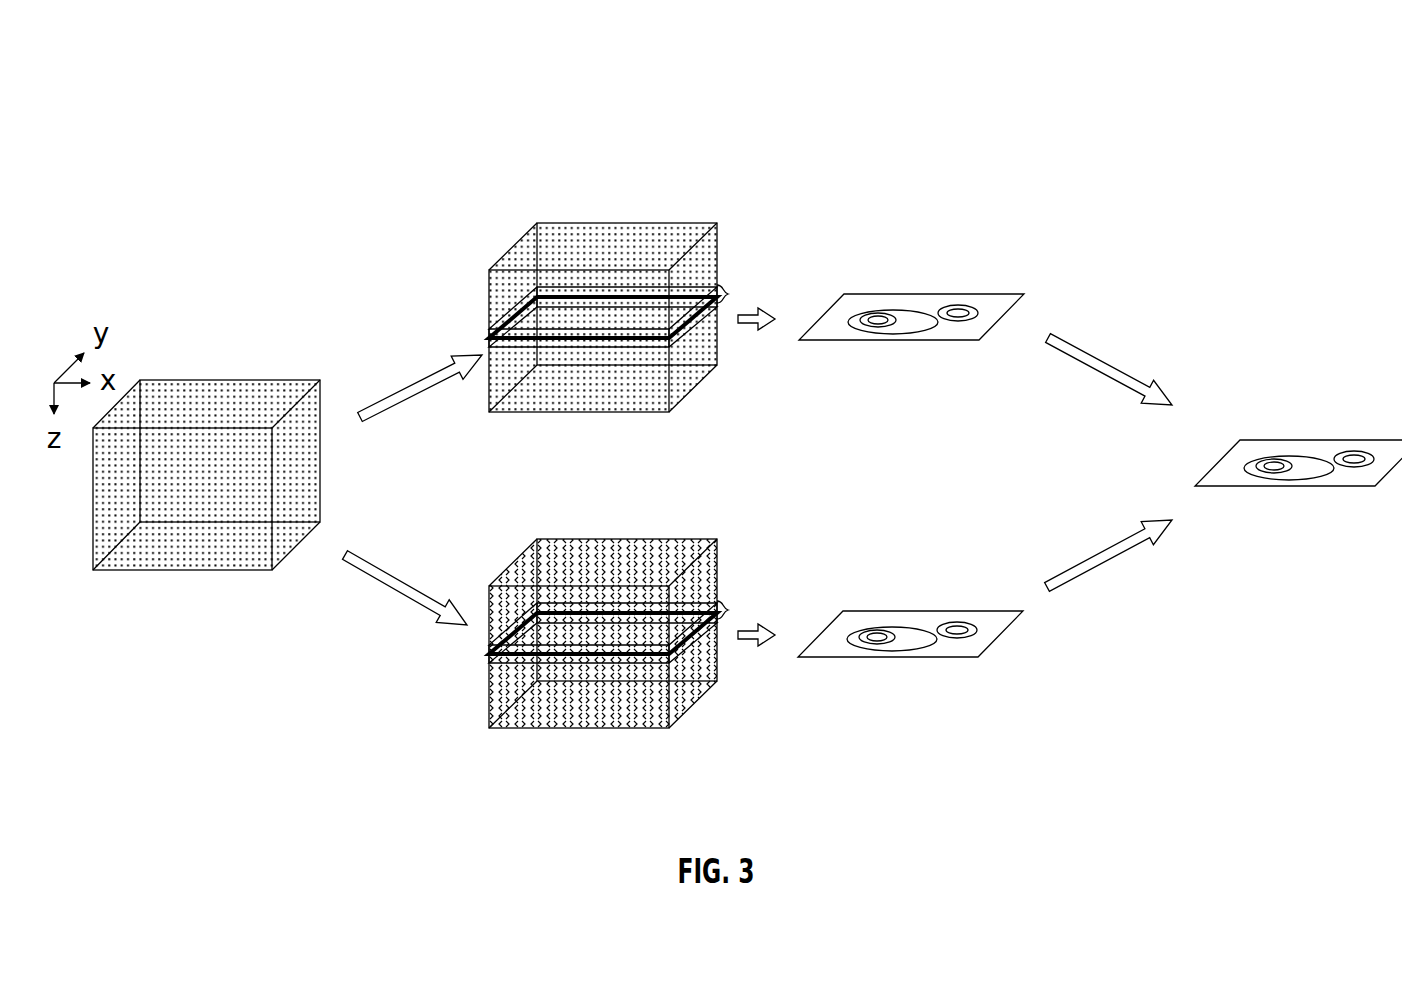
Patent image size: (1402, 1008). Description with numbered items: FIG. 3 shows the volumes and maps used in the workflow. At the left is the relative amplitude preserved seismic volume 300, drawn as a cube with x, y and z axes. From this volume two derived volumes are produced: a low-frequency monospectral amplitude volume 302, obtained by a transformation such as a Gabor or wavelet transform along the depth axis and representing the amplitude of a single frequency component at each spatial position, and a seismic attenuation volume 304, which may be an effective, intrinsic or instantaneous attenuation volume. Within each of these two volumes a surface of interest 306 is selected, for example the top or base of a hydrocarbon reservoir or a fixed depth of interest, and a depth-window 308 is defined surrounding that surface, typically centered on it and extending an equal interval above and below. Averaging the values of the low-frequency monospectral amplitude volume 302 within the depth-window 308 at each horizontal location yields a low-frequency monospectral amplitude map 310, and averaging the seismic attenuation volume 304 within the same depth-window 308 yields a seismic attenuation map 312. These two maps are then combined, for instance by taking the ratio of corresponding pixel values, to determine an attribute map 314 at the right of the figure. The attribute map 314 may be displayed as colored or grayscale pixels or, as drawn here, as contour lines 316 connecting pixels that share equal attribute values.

The relative amplitude preserved seismic volume 300 is at (212, 376).
The low-frequency monospectral amplitude volume 302 is at (591, 197).
The seismic attenuation volume 304 is at (591, 529).
The surface of interest 306 is at (458, 670).
The depth-window 308 is at (730, 610).
The low-frequency monospectral amplitude map 310 is at (981, 287).
The seismic attenuation map 312 is at (888, 663).
The attribute map 314 is at (1298, 462).
The contour lines 316 is at (1290, 482).